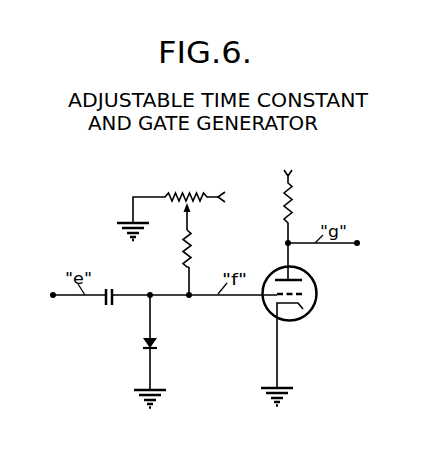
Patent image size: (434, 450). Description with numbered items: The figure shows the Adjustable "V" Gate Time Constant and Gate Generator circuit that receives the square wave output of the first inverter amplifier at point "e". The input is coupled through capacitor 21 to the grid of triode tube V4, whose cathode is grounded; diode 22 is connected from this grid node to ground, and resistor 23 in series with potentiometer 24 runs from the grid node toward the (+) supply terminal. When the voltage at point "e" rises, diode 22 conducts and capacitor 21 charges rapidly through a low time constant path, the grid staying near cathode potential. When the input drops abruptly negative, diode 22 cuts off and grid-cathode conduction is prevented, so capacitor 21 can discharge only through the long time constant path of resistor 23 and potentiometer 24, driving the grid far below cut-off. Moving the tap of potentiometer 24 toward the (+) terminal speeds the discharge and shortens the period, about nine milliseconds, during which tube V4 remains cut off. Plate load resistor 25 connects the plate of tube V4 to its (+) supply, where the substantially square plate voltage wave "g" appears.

The capacitor 21 is at (113, 290).
The diode 22 is at (156, 342).
The resistor 23 is at (192, 250).
The potentiometer 24 is at (183, 198).
The plate load resistor 25 is at (293, 210).
The triode tube V4 is at (315, 280).